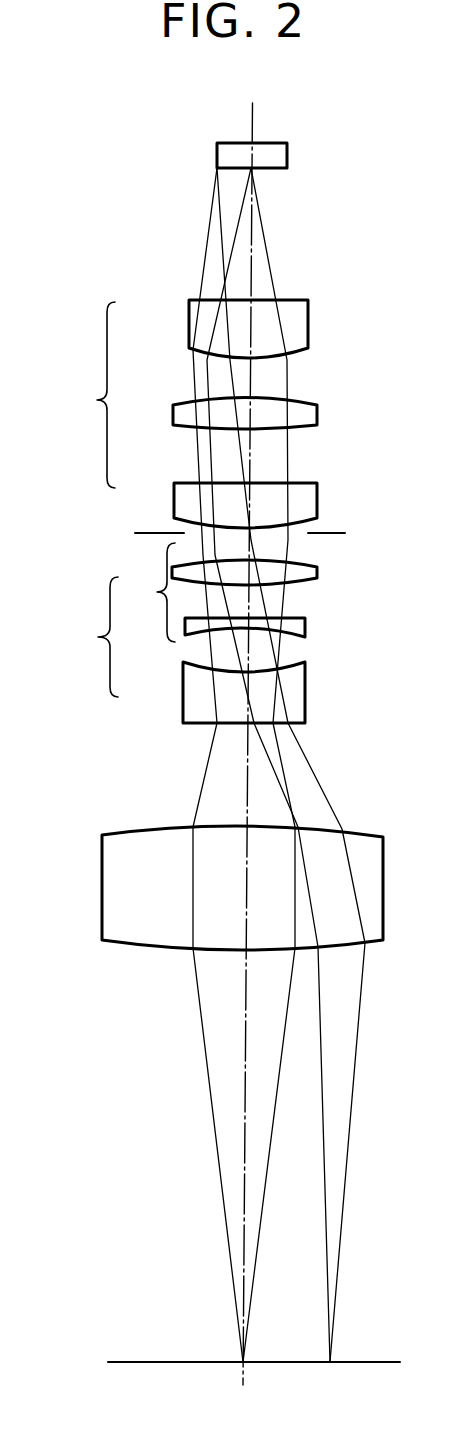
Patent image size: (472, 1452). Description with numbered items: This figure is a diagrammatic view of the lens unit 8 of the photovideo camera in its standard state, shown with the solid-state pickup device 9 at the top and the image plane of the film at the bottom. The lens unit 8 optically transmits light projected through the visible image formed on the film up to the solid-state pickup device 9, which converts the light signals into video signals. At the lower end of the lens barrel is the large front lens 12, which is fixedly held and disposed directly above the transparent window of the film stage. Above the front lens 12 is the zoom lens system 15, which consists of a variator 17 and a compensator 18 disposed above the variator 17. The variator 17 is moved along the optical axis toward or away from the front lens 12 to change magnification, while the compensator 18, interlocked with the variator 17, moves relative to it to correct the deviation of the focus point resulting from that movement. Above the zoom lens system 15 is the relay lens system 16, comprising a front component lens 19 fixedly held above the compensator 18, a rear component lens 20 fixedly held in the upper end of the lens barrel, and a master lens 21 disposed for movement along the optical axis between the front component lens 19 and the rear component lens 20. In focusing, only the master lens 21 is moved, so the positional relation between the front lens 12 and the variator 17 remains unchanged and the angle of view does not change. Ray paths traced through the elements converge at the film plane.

The lens unit 8 is at (354, 357).
The solid-state pickup device 9 is at (227, 155).
The front lens 12 is at (112, 885).
The zoom lens system 15 is at (189, 633).
The relay lens system 16 is at (190, 414).
The variator 17 is at (192, 697).
The compensator 18 is at (216, 592).
The front component lens 19 is at (183, 497).
The rear component lens 20 is at (189, 322).
The master lens 21 is at (182, 413).